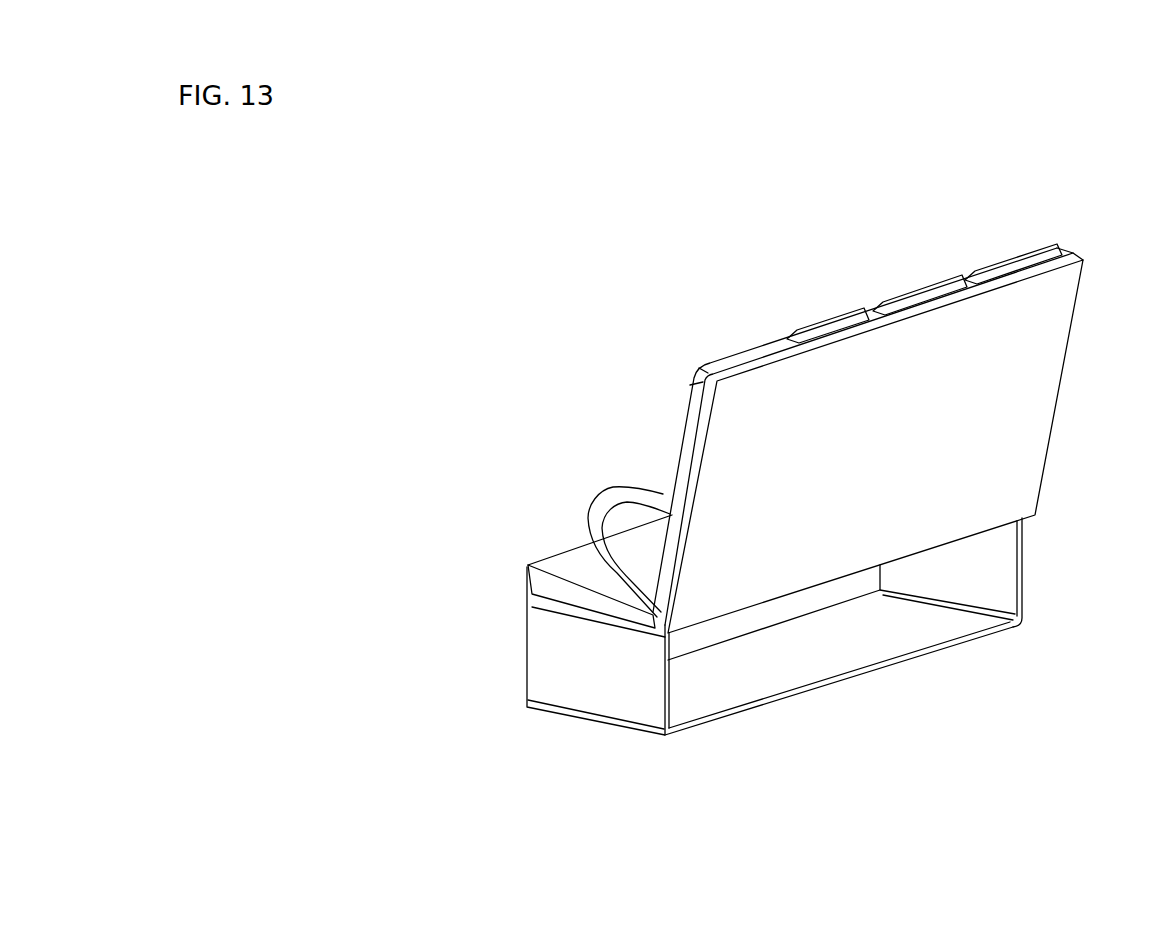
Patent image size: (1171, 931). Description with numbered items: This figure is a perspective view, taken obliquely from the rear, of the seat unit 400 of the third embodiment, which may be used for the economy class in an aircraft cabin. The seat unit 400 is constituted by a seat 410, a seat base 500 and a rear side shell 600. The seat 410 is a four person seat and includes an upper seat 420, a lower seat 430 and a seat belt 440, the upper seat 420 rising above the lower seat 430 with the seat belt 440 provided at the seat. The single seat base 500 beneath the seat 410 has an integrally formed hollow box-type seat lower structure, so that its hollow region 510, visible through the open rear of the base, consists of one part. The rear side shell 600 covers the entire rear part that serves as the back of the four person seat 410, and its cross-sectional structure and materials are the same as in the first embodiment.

The seat unit 400 is at (988, 194).
The seat 410 is at (820, 305).
The upper seat 420 is at (687, 440).
The lower seat 430 is at (555, 588).
The seat belt 440 is at (597, 530).
The seat base 500 is at (590, 700).
The hollow region 510 is at (815, 643).
The rear side shell 600 is at (1028, 433).